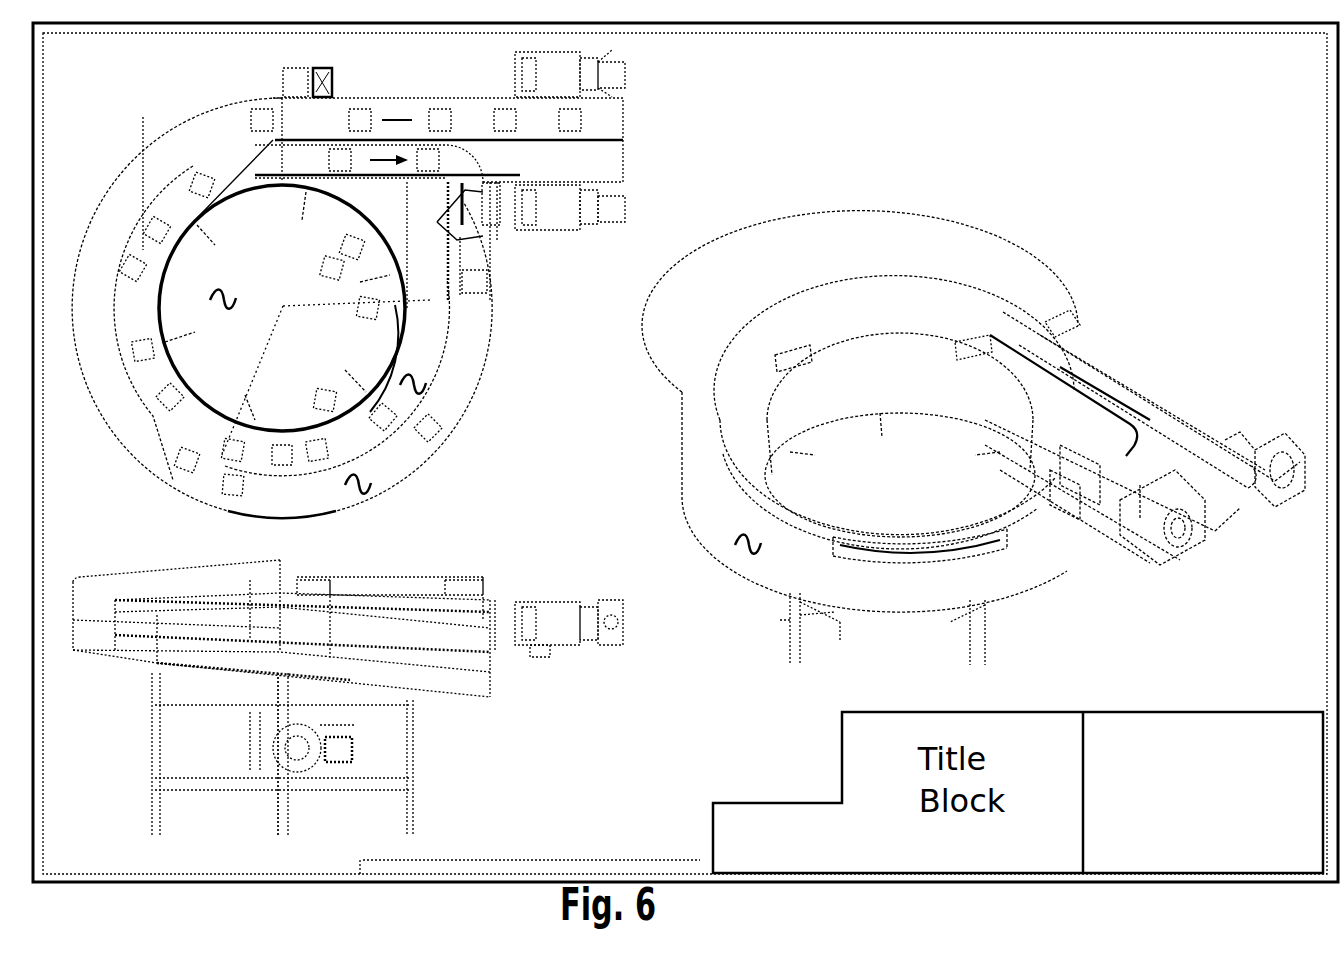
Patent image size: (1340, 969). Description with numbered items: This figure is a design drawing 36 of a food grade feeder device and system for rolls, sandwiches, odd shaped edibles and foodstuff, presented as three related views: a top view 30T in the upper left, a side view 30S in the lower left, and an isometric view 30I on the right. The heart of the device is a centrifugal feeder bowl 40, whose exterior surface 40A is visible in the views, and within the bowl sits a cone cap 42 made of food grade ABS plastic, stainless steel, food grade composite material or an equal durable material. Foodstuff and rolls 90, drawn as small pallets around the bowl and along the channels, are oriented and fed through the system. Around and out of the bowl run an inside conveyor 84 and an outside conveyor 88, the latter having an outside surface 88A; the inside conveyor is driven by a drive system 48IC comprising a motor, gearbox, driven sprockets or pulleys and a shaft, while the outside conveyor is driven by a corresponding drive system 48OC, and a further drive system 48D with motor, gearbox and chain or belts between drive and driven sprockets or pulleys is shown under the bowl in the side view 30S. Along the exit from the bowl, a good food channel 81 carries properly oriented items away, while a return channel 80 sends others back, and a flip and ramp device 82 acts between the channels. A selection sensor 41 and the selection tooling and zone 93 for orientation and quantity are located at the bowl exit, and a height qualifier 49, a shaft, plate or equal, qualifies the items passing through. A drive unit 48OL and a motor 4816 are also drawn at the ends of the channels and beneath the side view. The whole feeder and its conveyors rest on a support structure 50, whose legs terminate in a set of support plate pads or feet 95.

The centrifugal feeder bowl 40 is at (163, 275).
The cone cap 42 is at (210, 286).
The exterior surface of feeder bowl 40A is at (403, 327).
The selection sensor 41 is at (297, 92).
The height qualifier 49 is at (773, 367).
The selection tooling and zone 93 is at (330, 65).
The outer lane motor 48OL is at (535, 70).
The drive system for inside conveyor 48IC is at (565, 205).
The drive system for outside conveyor 48OC is at (1293, 477).
The drive system 48D is at (312, 750).
The side drive motor 4816 is at (550, 628).
The return channel 80 is at (470, 163).
The good food channel 81 is at (612, 116).
The flip and ramp device 82 is at (437, 222).
The inside conveyor 84 is at (412, 378).
The outside conveyor 88 is at (357, 492).
The outside surface of outside conveyor 88A is at (735, 540).
The foodstuff and rolls 90 is at (240, 488).
The support plate pads/feet 95 is at (278, 795).
The support structure 50 is at (413, 748).
The design drawing 36 is at (490, 855).
The top view 30T is at (113, 483).
The side view 30S is at (95, 752).
The isometric view 30I is at (740, 655).